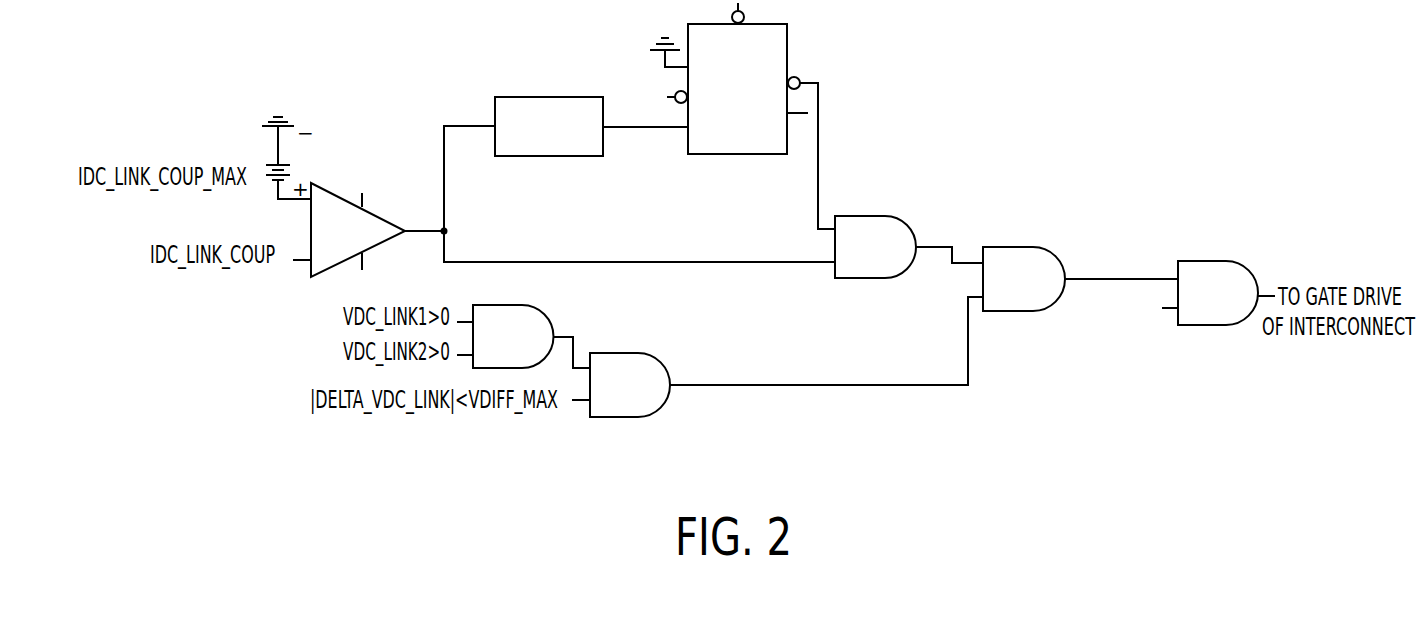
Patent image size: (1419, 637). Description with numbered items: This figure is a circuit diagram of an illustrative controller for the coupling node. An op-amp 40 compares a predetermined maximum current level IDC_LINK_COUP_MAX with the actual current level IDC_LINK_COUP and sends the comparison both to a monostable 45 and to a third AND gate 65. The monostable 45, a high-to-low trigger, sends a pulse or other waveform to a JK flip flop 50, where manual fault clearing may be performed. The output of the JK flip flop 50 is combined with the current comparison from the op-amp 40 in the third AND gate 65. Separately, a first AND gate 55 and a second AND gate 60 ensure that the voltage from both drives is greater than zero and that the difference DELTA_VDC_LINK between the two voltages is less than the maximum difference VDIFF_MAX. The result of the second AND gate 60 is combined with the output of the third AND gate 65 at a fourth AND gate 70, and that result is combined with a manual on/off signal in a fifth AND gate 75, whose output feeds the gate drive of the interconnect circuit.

The op-amp 40 is at (395, 222).
The monostable 45 is at (538, 97).
The JK flip flop 50 is at (787, 53).
The first AND gate 55 is at (546, 318).
The second AND gate 60 is at (628, 353).
The third AND gate 65 is at (865, 216).
The fourth AND gate 70 is at (1017, 247).
The fifth AND gate 75 is at (1215, 261).